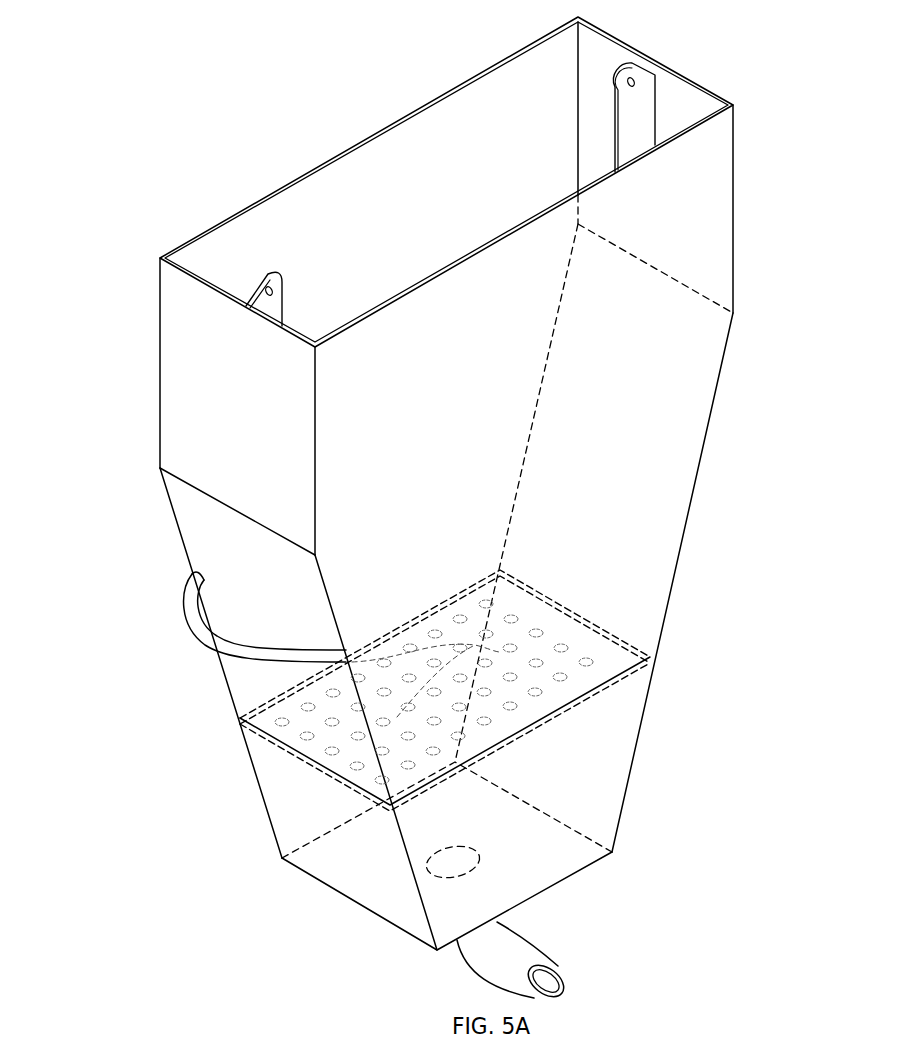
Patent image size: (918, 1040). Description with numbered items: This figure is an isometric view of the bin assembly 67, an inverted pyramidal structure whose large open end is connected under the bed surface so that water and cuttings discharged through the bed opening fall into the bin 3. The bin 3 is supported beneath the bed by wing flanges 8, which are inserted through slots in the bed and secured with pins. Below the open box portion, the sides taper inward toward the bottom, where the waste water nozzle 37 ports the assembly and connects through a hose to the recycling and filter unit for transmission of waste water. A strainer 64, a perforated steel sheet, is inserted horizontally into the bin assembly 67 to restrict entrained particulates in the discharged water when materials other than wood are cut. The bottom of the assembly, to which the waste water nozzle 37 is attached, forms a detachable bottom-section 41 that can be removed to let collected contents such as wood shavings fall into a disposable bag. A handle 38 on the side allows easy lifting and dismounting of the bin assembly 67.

The bin assembly 67 is at (106, 78).
The bin 3 is at (708, 427).
The wing flanges 8 is at (275, 278).
The handle 38 is at (203, 636).
The strainer 64 is at (573, 627).
The detachable bottom-section 41 is at (613, 795).
The waste water nozzle 37 is at (532, 960).